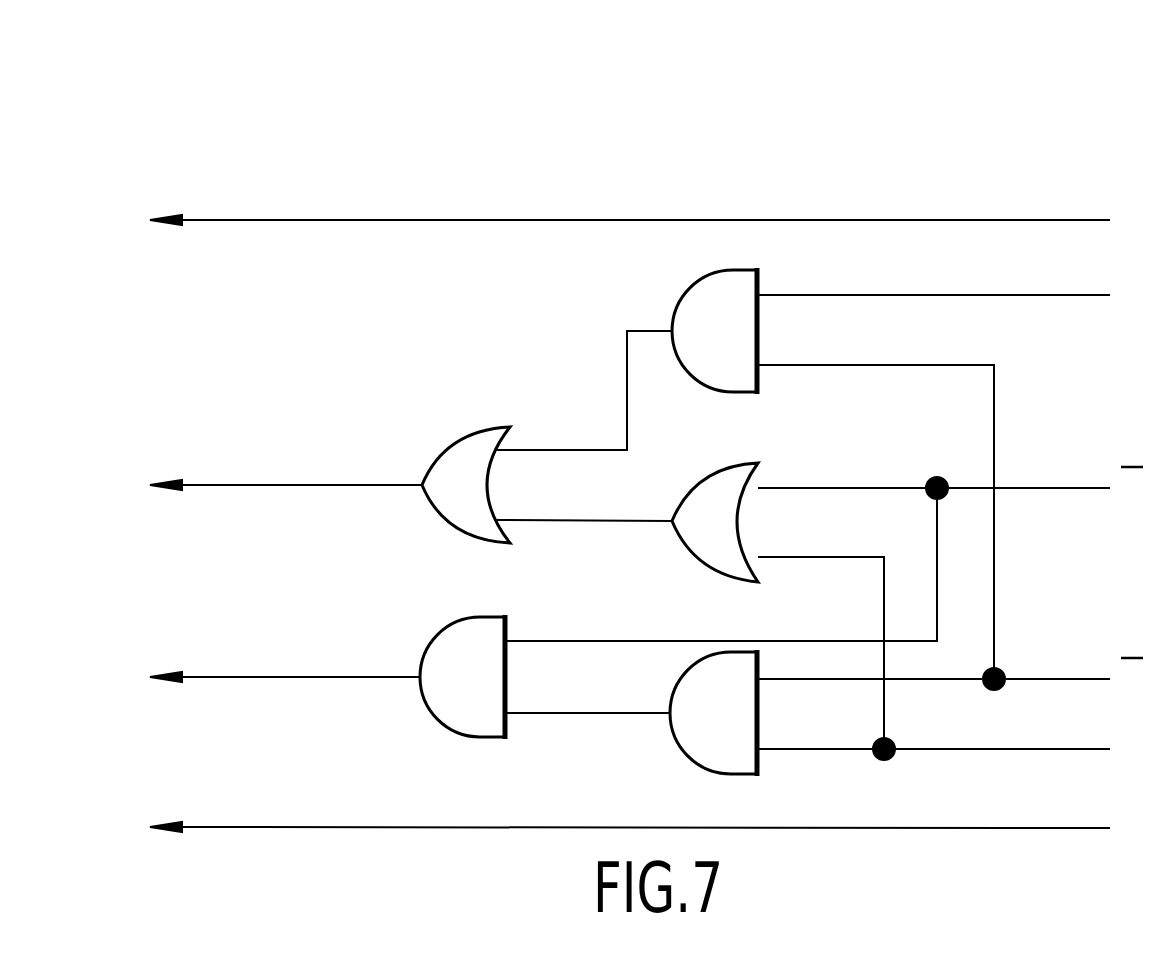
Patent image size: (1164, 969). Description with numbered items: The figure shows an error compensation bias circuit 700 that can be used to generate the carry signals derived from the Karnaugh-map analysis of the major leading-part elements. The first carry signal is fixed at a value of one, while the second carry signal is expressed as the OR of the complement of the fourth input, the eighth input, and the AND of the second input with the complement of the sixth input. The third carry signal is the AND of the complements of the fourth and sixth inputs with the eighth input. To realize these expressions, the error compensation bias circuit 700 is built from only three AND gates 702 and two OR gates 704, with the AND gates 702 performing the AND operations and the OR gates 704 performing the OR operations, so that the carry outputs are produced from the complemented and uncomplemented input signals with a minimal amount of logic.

The error compensation bias circuit 700 is at (654, 436).
The AND gate 702 is at (702, 390).
The OR gate 704 is at (457, 536).